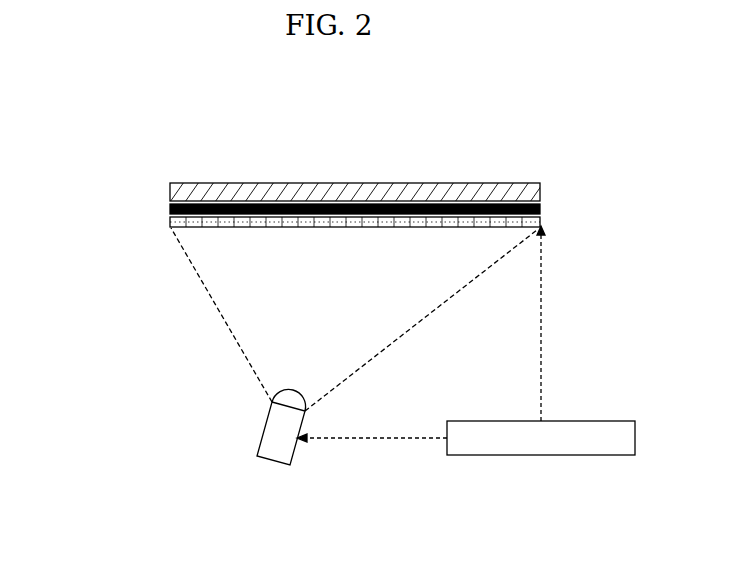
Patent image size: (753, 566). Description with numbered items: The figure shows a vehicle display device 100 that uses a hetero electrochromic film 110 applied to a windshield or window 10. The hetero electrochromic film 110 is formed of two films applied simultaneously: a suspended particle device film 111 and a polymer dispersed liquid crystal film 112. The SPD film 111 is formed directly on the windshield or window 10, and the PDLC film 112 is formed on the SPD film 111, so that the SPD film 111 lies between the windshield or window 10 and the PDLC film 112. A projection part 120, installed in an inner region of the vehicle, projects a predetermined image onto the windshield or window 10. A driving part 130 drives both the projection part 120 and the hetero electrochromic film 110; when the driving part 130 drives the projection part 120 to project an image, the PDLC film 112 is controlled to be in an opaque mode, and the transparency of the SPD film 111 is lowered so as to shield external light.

The vehicle display device 100 is at (160, 114).
The windshield and window 10 is at (252, 182).
The hetero electrochromic film 110 is at (89, 193).
The suspended particle device (SPD) film 111 is at (170, 209).
The polymer dispersed liquid crystal (PDLC) film 112 is at (171, 223).
The projection part 120 is at (263, 424).
The driving part 130 is at (541, 456).